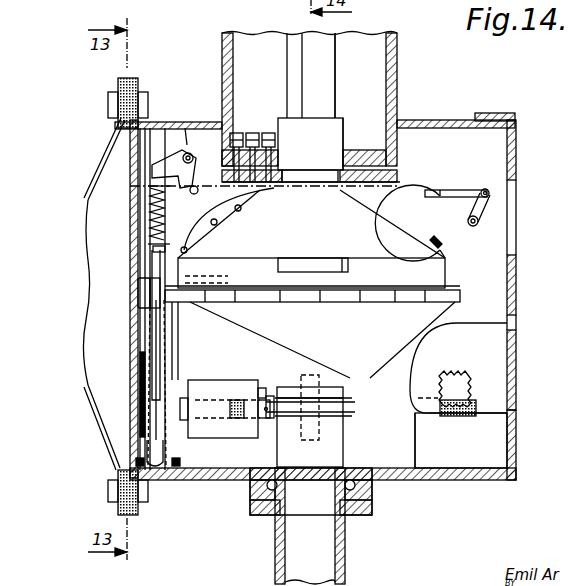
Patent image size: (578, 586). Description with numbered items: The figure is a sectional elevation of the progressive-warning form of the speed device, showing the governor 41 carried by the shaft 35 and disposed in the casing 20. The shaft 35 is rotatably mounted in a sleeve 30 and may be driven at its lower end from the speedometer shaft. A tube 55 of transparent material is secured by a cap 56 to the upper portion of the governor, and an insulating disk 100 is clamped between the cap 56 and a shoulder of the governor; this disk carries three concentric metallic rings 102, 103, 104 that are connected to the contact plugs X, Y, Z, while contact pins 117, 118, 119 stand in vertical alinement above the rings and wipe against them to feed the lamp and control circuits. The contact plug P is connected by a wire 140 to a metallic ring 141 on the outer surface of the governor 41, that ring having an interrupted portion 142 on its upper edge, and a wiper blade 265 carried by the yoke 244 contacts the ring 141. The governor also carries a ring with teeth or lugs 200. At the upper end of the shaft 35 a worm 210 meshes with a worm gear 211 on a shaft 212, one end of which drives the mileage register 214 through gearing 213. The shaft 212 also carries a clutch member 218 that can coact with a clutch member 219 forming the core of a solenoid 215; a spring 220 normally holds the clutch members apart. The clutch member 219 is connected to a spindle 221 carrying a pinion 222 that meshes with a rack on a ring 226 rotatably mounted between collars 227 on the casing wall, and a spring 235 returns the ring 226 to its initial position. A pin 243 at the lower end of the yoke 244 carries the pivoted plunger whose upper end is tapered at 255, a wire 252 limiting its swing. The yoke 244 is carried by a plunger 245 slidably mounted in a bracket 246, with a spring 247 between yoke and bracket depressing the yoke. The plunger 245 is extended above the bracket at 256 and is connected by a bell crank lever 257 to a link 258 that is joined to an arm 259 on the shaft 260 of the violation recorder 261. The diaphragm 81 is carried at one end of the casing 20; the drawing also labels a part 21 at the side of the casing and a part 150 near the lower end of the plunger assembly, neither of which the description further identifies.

The casing 20 is at (436, 470).
The housing side wall 21 is at (516, 440).
The sleeve 30 is at (345, 550).
The shaft 35 is at (290, 551).
The governor 41 is at (418, 316).
The tube 55 is at (330, 65).
The cap 56 is at (347, 75).
The diaphragm 81 is at (128, 152).
The disk 100 is at (398, 172).
The metallic ring 102 is at (383, 172).
The metallic ring 103 is at (333, 130).
The metallic ring 104 is at (346, 152).
The contact pin 117 is at (268, 133).
The contact pin 118 is at (252, 132).
The contact pin 119 is at (237, 130).
The wire 140 is at (437, 256).
The metallic ring 141 is at (340, 262).
The interrupted portion 142 is at (284, 258).
The cup 150 is at (158, 444).
The teeth or lugs 200 is at (458, 295).
The worm 210 is at (276, 430).
The worm gear 211 is at (320, 380).
The shaft 212 is at (330, 398).
The gearing 213 is at (476, 395).
The mileage register 214 is at (500, 344).
The solenoid 215 is at (200, 480).
The clutch member 218 is at (260, 388).
The clutch member 219 is at (217, 396).
The spring 220 is at (214, 418).
The spindle 221 is at (185, 400).
The pinion 222 is at (150, 374).
The ring or arcuate strip 226 is at (173, 305).
The collars 227 is at (150, 482).
The spring 235 is at (135, 344).
The pin 243 is at (158, 420).
The yoke 244 is at (155, 248).
The plunger 245 is at (154, 214).
The bracket 246 is at (150, 182).
The spring 247 is at (150, 200).
The wire 252 is at (153, 268).
The tapered end 255 is at (178, 316).
The extension 256 is at (155, 148).
The bell crank lever 257 is at (186, 148).
The link 258 is at (444, 190).
The arm 259 is at (490, 190).
The shaft 260 is at (480, 220).
The violation recorder 261 is at (500, 231).
The wiper blade 265 is at (228, 278).
The contact plug P is at (428, 246).
The contact plug X is at (227, 223).
The contact plug Y is at (218, 222).
The contact plug Z is at (242, 208).